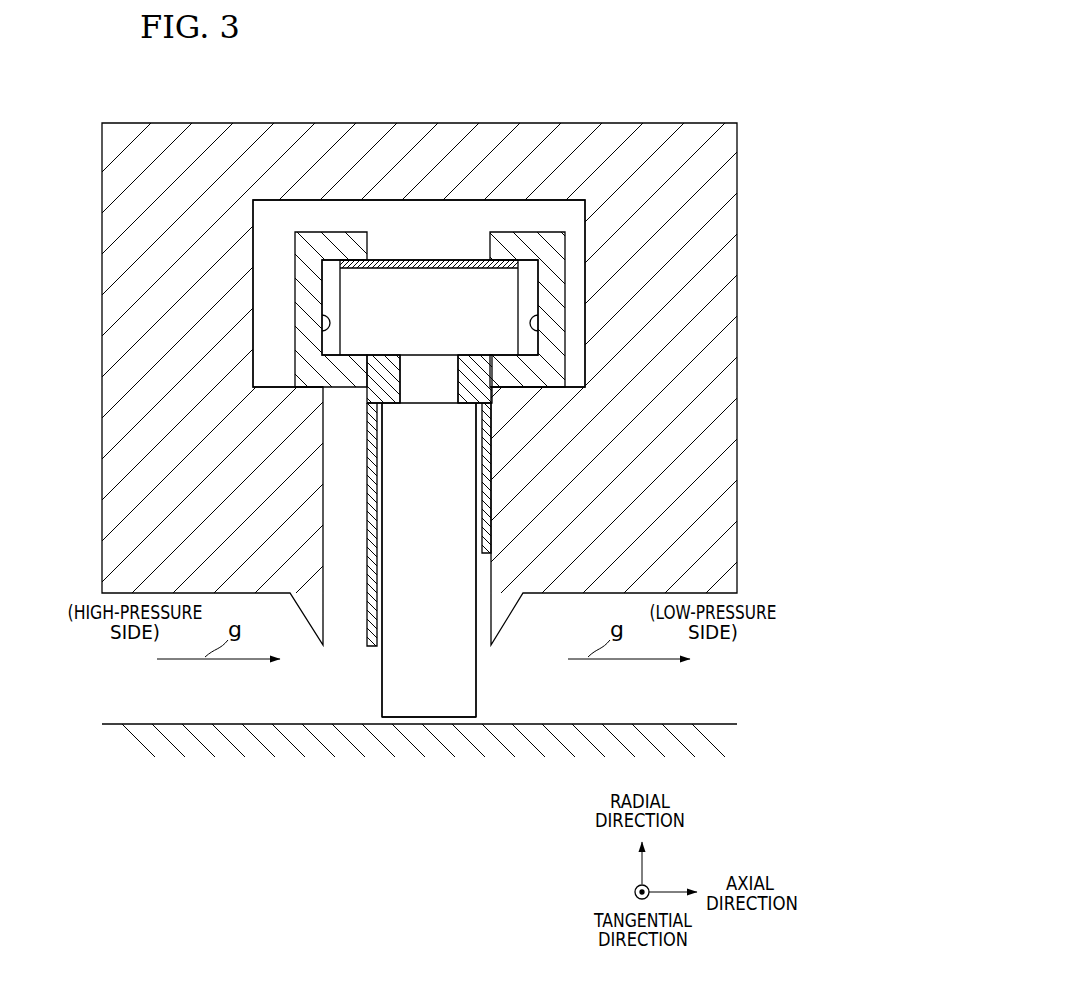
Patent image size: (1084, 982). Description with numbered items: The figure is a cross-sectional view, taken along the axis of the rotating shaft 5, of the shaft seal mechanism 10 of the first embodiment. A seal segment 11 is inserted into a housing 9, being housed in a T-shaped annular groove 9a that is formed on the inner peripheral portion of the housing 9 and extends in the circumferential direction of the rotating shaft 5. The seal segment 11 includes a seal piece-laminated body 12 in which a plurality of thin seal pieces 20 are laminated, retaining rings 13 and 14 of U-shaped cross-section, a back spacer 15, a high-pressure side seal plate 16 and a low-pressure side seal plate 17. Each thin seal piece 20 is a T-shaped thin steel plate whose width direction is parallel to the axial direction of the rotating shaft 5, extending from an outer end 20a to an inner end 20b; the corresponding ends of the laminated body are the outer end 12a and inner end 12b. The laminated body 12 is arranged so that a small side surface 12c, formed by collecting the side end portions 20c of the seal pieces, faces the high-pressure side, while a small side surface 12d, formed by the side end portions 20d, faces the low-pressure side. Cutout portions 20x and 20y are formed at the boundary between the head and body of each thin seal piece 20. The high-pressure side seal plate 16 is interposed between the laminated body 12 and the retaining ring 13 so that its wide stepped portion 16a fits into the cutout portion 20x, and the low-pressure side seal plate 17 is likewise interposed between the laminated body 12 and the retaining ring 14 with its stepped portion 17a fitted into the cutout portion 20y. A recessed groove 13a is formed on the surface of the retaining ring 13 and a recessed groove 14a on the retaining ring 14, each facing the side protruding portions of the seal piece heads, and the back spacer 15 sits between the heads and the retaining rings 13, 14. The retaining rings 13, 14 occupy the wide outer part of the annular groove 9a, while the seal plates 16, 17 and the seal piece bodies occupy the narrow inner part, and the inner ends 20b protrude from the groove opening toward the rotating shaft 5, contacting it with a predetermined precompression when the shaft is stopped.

The rotating shaft 5 is at (690, 735).
The housing 9 is at (727, 201).
The T-shaped annular groove 9a is at (530, 213).
The shaft seal mechanism 10 is at (430, 421).
The seal segment 11 is at (430, 231).
The seal piece-laminated body 12 is at (438, 426).
The outer end of seal piece-laminated body 12a is at (400, 266).
The inner end of seal piece-laminated body 12b is at (415, 720).
The small side surface 12c is at (381, 663).
The small side surface 12d is at (477, 663).
The retaining ring 13 is at (207, 309).
The recessed groove 13a is at (322, 336).
The retaining ring 14 is at (652, 309).
The recessed groove 14a is at (542, 336).
The back spacer 15 is at (429, 159).
The high-pressure side seal plate 16 is at (369, 468).
The stepped portion 16a is at (388, 377).
The low-pressure side seal plate 17 is at (617, 422).
The stepped portion 17a is at (470, 377).
The thin seal piece 20 is at (438, 578).
The outer end 20a is at (429, 158).
The inner end 20b is at (444, 759).
The side end portion 20c is at (339, 638).
The side end portion 20d is at (516, 638).
The cutout portion 20x is at (392, 406).
The cutout portion 20y is at (460, 404).